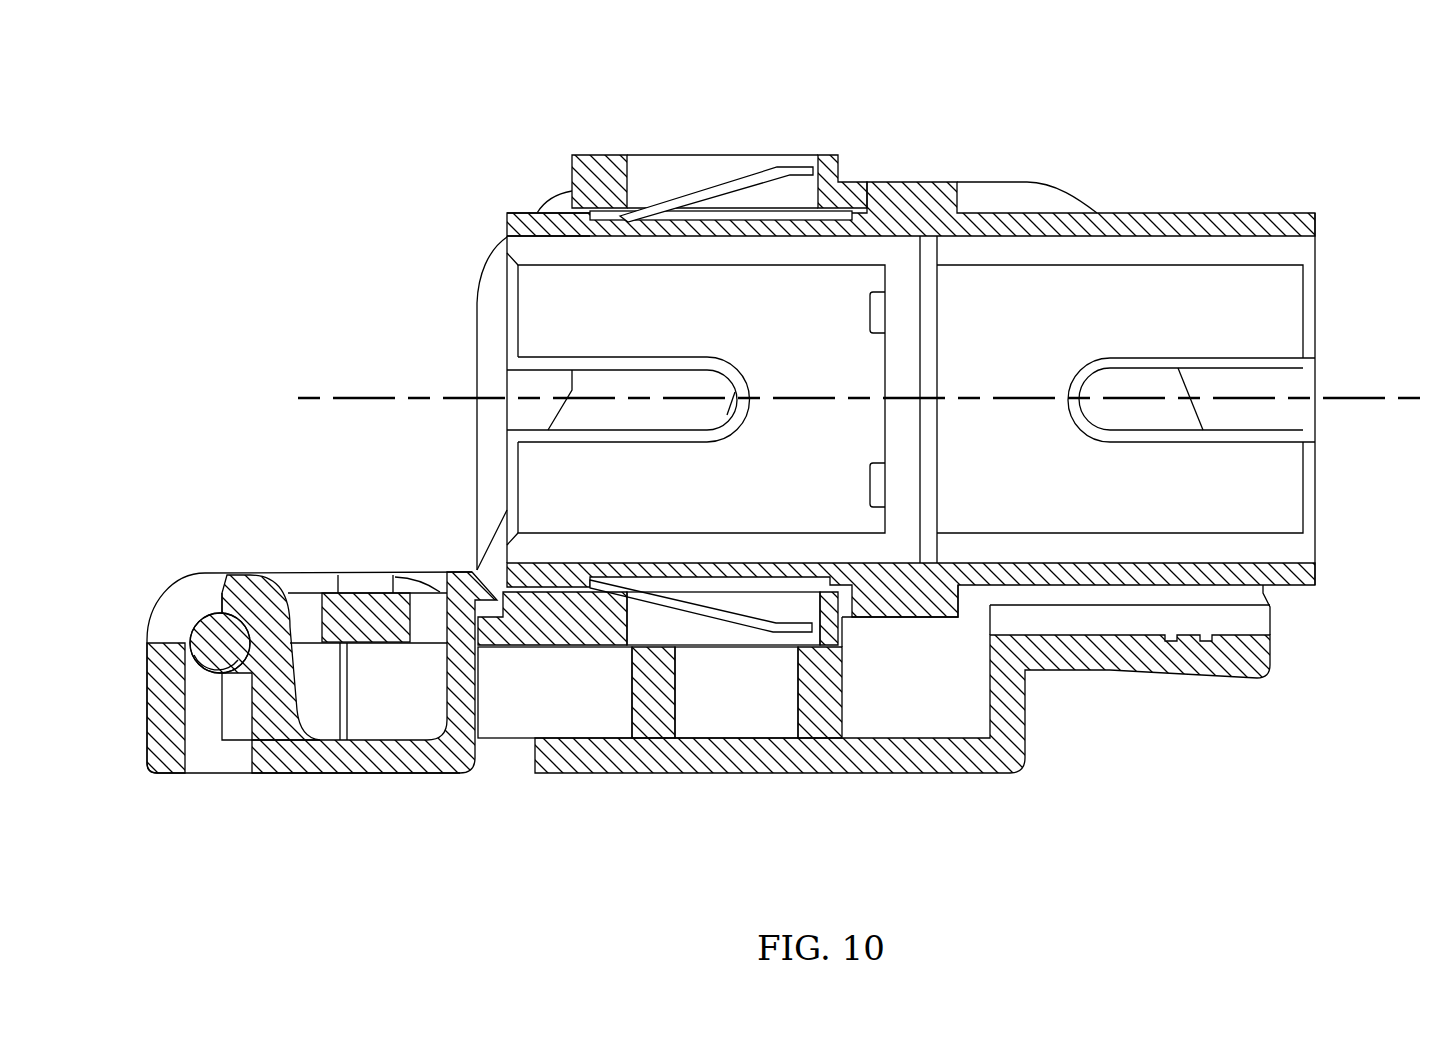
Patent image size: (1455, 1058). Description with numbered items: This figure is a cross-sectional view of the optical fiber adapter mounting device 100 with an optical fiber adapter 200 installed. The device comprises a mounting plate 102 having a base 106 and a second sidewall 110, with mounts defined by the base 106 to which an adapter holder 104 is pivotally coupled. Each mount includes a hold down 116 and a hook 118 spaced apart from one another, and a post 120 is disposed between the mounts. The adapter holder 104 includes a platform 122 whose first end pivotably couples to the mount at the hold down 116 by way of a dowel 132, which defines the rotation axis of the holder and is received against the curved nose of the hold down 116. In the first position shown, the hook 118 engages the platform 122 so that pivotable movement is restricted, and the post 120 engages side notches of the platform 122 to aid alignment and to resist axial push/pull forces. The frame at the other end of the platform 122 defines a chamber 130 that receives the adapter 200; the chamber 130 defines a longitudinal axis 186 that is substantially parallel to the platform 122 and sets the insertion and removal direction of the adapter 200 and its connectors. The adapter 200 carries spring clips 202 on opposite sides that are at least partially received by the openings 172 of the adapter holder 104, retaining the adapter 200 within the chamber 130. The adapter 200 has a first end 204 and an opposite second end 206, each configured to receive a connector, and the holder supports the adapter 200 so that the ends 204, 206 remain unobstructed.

The adapter mounting device 100 is at (237, 99).
The mounting plate 102 is at (942, 766).
The adapter holder 104 is at (612, 155).
The base 106 is at (810, 774).
The second sidewall 110 is at (1058, 190).
The hold down 116 is at (258, 600).
The hook 118 is at (458, 690).
The post 120 is at (340, 695).
The platform 122 is at (430, 616).
The chamber 130 is at (575, 226).
The dowel 132 is at (205, 640).
The opening 172 is at (715, 160).
The longitudinal axis 186 is at (1365, 400).
The optical fiber adapter 200 is at (1218, 213).
The spring clip 202 is at (780, 180).
The first end 204 is at (517, 316).
The second end 206 is at (1318, 520).